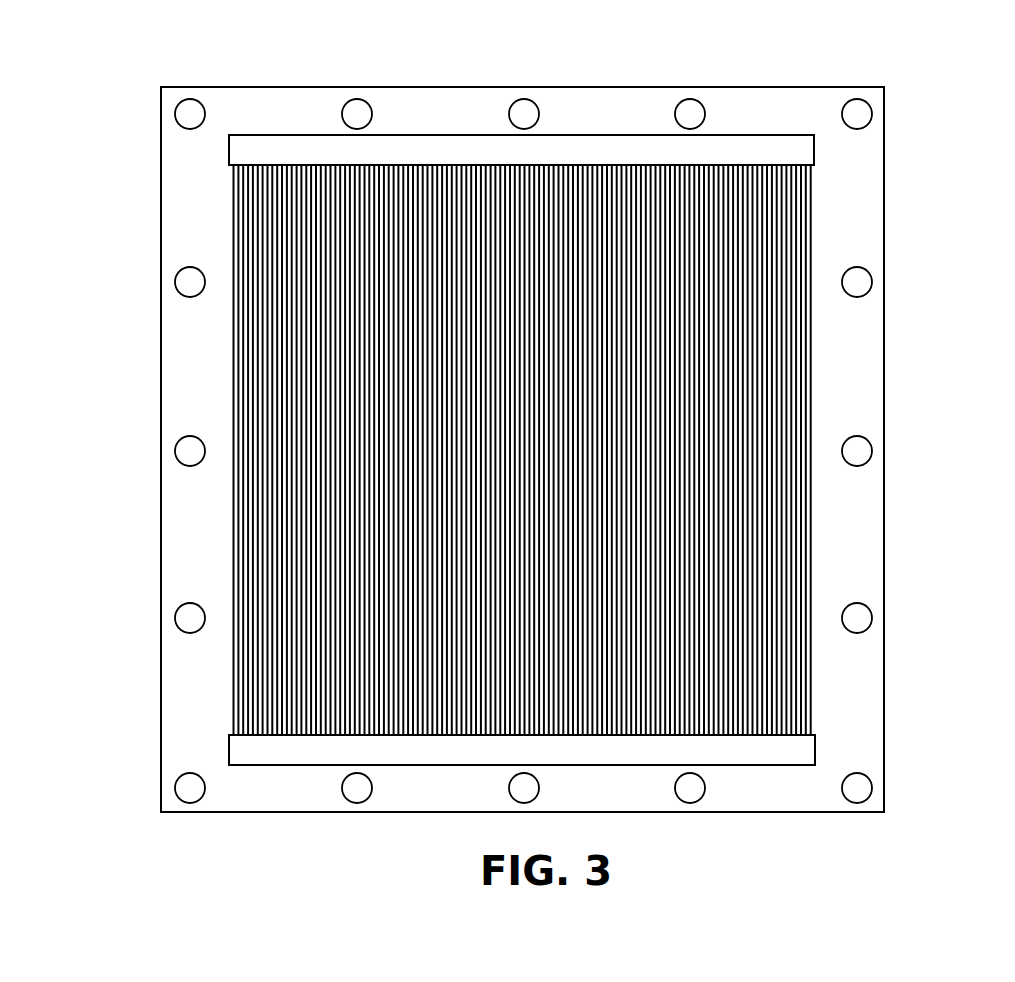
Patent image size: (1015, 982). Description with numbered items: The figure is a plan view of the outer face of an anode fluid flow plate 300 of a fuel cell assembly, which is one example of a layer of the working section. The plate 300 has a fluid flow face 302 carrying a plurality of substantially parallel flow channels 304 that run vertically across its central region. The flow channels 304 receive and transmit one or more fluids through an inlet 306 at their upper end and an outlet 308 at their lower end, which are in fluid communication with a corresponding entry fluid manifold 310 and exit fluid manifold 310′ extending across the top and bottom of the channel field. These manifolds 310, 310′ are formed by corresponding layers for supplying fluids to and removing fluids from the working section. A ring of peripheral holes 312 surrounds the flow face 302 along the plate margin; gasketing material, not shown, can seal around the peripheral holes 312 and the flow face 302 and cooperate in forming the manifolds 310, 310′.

The fluid flow plate 300 is at (525, 455).
The fluid flow face 302 is at (522, 449).
The flow channels 304 is at (812, 370).
The inlet port 306 is at (432, 167).
The outlet port 308 is at (323, 732).
The entry fluid manifold 310 is at (777, 155).
The exit fluid manifold 310′ is at (270, 747).
The peripheral holes 312 is at (177, 452).